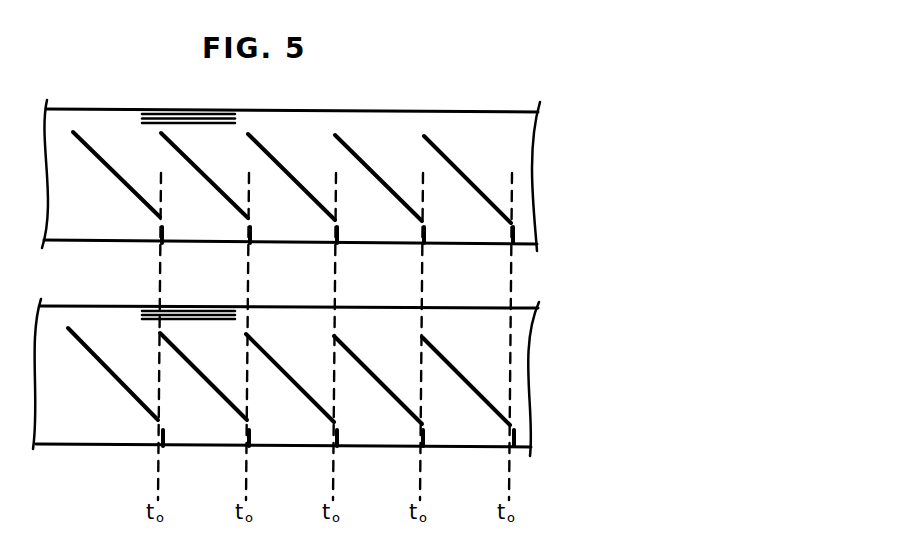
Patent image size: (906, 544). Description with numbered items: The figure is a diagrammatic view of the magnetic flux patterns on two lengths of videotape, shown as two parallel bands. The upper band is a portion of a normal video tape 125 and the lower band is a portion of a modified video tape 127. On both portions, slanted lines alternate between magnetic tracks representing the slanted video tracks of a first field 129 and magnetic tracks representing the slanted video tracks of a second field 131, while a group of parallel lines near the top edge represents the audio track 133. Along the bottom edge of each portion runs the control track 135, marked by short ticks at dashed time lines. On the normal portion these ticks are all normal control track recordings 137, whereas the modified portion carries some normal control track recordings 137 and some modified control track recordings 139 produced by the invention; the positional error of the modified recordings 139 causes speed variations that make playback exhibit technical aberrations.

The portion of a normal video tape 125 is at (571, 137).
The portion of a modified video tape 127 is at (558, 375).
The slanted video tracks of a first field 129 is at (209, 170).
The slanted video tracks of a second field 131 is at (97, 142).
The audio track 133 is at (135, 119).
The control track 135 is at (137, 233).
The normal control track recordings 137 is at (166, 232).
The modified control track recordings 139 is at (167, 433).